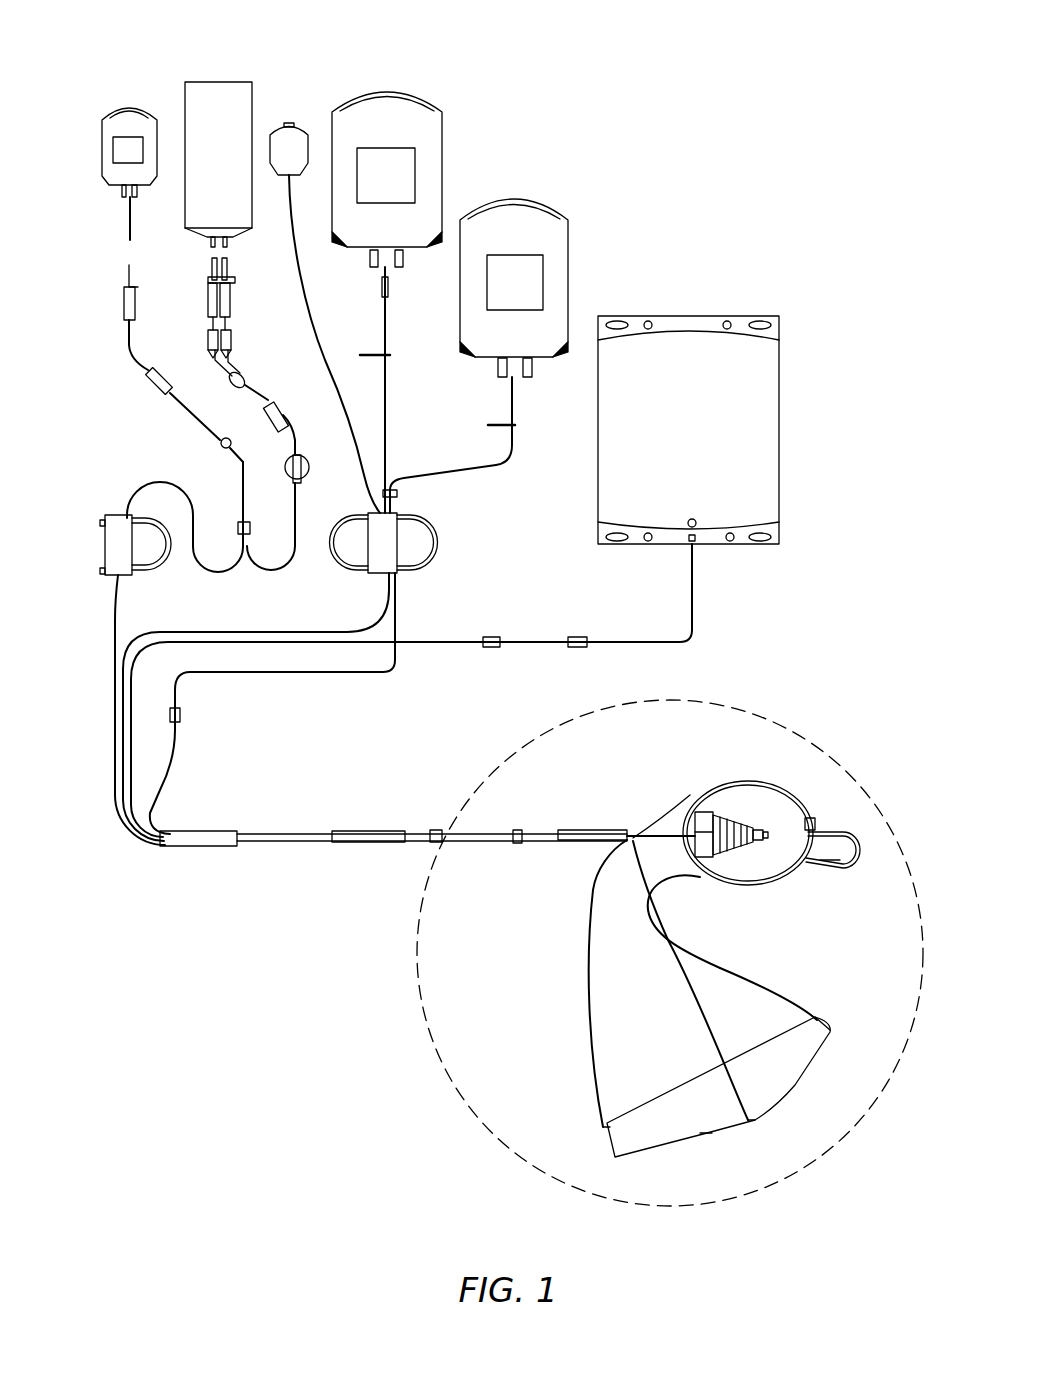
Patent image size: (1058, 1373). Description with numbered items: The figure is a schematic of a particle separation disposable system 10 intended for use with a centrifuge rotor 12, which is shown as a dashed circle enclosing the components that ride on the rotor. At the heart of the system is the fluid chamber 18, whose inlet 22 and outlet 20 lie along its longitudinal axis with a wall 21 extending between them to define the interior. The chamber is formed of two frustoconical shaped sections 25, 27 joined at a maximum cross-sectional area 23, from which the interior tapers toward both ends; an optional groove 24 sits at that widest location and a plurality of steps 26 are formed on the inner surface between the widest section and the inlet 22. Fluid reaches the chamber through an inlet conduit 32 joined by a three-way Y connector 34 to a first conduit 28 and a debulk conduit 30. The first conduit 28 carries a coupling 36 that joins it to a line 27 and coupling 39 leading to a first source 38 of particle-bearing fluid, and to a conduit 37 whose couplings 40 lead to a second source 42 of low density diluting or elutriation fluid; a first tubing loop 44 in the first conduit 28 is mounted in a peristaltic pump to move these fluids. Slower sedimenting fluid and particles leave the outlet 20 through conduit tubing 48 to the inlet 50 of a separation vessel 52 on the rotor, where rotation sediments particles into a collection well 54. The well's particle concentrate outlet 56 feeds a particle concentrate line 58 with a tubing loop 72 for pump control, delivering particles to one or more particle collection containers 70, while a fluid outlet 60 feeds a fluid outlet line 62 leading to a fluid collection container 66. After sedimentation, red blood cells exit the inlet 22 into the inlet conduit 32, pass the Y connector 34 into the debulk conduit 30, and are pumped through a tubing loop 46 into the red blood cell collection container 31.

The particle separation disposable system 10 is at (572, 97).
The centrifuge rotor 12 is at (775, 704).
The fluid chamber 18 is at (737, 810).
The outlet 20 is at (688, 832).
The wall 21 is at (753, 847).
The inlet 22 is at (760, 832).
The maximum cross-sectional area 23 is at (697, 873).
The groove 24 is at (703, 812).
The frustoconical shaped section 25 is at (697, 835).
The steps 26 is at (748, 850).
The frustoconical shaped section 27 is at (132, 360).
The first conduit 28 is at (197, 544).
The debulk conduit 30 is at (317, 353).
The red blood cell collection container 31 is at (295, 176).
The inlet conduit 32 is at (823, 870).
The Y connector 34 is at (823, 833).
The coupling 36 is at (252, 528).
The conduit 37 is at (263, 397).
The first source 38 is at (104, 185).
The coupling 39 is at (127, 273).
The couplings 40 is at (212, 268).
The second source 42 is at (242, 120).
The first tubing loop 44 is at (157, 569).
The tubing loop 46 is at (365, 517).
The conduit tubing 48 is at (698, 948).
The inlet 50 is at (831, 1022).
The separation vessel 52 is at (800, 1087).
The collection well 54 is at (707, 1134).
The particle concentrate outlet 56 is at (756, 1120).
The particle concentrate line 58 is at (396, 630).
The fluid outlet 60 is at (607, 1130).
The fluid outlet line 62 is at (540, 638).
The fluid collection container 66 is at (777, 423).
The particle collection containers 70 is at (442, 147).
The tubing loop 72 is at (437, 540).